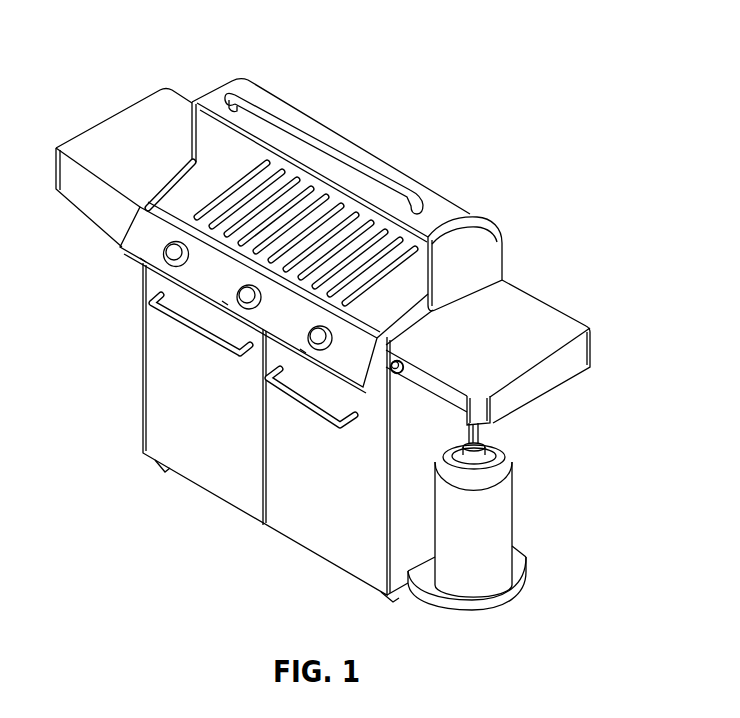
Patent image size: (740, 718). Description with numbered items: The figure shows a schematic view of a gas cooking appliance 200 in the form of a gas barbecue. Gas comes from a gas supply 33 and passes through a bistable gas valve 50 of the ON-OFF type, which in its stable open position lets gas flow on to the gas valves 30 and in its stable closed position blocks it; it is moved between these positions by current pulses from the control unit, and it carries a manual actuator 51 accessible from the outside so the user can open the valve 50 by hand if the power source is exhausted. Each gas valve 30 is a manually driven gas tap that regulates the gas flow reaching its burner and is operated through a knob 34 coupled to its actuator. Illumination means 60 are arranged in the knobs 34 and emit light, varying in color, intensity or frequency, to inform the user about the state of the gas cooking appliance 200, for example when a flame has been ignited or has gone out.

The gas cooking appliance 200 is at (580, 166).
The illumination means 60 is at (410, 273).
The gas valve 30 is at (282, 341).
The knob 34 is at (303, 351).
The manual actuator 51 is at (405, 362).
The bistable gas valve 50 is at (506, 417).
The gas supply 33 is at (478, 528).